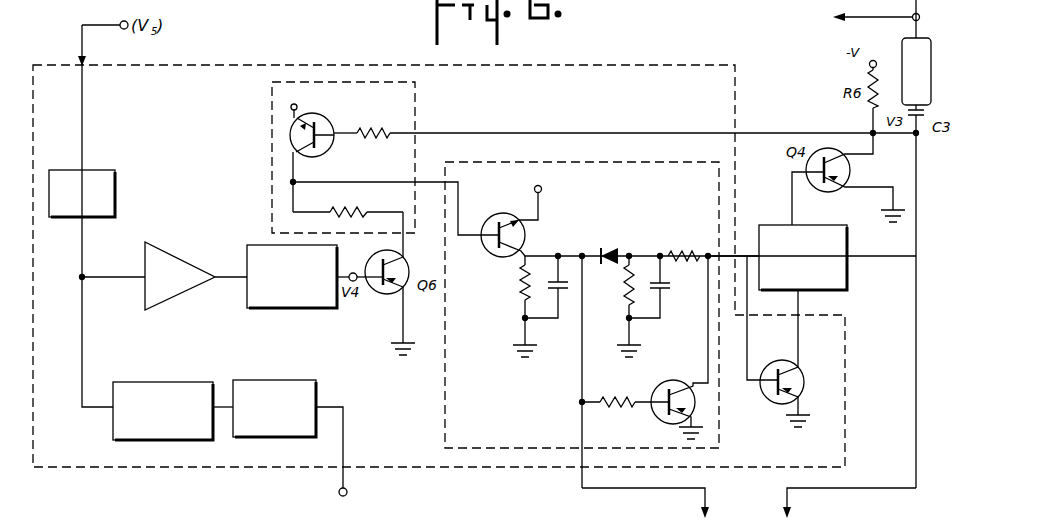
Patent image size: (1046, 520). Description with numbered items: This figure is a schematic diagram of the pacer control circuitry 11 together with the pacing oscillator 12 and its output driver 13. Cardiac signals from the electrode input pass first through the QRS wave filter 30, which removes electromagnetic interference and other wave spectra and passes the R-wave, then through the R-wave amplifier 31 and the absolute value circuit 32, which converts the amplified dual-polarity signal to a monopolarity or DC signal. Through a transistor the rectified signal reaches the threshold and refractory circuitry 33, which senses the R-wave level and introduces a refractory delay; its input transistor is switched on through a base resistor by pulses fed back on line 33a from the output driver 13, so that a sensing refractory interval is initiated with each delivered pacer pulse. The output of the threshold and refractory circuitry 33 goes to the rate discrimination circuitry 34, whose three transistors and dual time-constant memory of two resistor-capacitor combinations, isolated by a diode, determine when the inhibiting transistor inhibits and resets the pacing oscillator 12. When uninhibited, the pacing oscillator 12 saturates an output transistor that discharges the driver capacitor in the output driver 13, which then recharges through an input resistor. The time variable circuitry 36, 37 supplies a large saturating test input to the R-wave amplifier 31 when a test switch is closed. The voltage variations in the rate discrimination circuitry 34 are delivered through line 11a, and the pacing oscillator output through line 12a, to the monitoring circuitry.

The control circuitry 11 is at (636, 58).
The input to monitoring circuitry 11a is at (665, 503).
The pacing oscillator 12 is at (847, 255).
The input to monitoring circuitry 12a is at (836, 503).
The output driver 13 is at (902, 42).
The QRS wave filter 30 is at (112, 176).
The R-wave amplifier 31 is at (162, 308).
The absolute value circuit 32 is at (268, 308).
The threshold and refractory circuitry 33 is at (418, 115).
The line 33a is at (537, 133).
The rate discrimination circuitry 34 is at (445, 403).
The time variable circuitry 36 is at (273, 380).
The time variable circuitry 37 is at (167, 382).